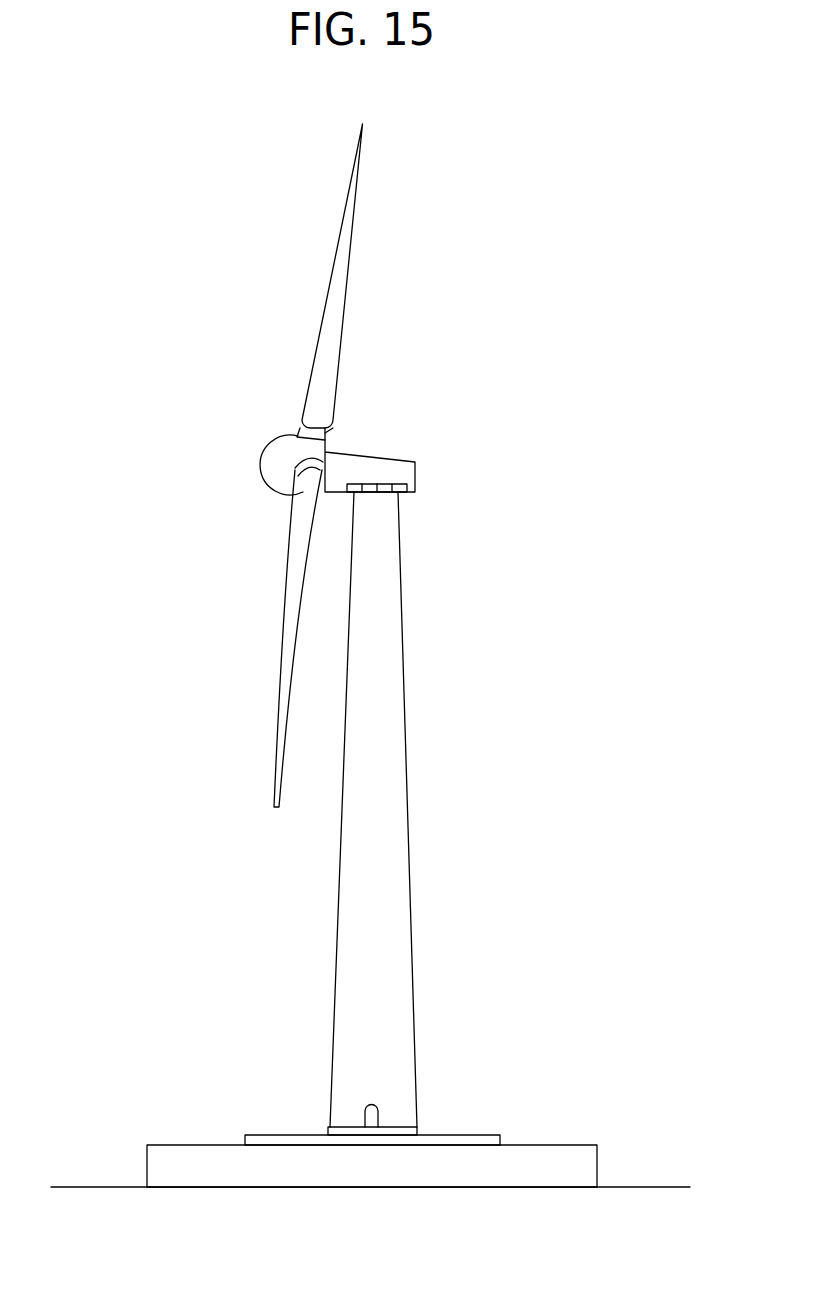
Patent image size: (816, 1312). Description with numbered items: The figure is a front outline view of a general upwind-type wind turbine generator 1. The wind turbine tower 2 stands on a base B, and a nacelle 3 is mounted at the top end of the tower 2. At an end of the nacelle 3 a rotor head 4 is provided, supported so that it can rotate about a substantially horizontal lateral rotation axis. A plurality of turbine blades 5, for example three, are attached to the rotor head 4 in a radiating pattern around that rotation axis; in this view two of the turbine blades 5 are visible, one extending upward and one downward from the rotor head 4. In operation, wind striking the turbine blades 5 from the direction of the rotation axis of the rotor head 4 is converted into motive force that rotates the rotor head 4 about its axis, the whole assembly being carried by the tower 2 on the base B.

The wind turbine generator 1 is at (503, 355).
The wind turbine tower 2 is at (403, 677).
The nacelle 3 is at (414, 462).
The rotor head 4 is at (262, 458).
The turbine blade 5 is at (352, 223).
The base B is at (556, 1145).